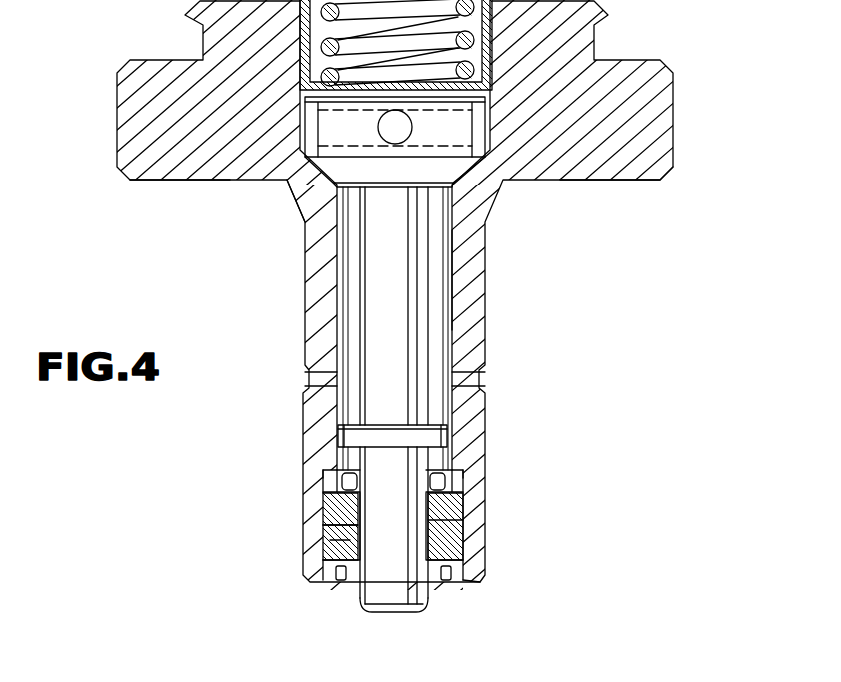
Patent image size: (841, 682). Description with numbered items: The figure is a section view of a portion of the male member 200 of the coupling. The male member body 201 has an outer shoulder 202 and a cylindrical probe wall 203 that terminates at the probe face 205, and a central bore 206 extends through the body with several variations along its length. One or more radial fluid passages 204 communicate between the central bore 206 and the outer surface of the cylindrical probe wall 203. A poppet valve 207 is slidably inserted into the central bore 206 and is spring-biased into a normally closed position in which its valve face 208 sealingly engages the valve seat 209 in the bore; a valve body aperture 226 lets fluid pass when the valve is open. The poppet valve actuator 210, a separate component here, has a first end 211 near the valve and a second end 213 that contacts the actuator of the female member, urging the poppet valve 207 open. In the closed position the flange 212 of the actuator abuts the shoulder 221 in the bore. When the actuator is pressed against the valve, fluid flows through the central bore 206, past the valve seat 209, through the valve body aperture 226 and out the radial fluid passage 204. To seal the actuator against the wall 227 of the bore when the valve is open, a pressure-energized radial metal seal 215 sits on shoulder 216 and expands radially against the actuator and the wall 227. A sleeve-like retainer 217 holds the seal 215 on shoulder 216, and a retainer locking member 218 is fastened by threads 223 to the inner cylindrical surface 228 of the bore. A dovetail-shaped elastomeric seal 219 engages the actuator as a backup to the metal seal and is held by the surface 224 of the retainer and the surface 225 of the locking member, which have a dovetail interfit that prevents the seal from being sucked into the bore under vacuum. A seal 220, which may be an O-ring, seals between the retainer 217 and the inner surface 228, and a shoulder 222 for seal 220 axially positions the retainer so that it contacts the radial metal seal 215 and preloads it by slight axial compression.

The male member 200 is at (508, 396).
The male member body 201 is at (675, 112).
The outer shoulder 202 is at (628, 185).
The cylindrical probe wall 203 is at (490, 513).
The radial fluid passage 204 is at (482, 380).
The probe face 205 is at (478, 586).
The central bore 206 is at (440, 272).
The poppet valve 207 is at (300, 113).
The valve face 208 is at (400, 187).
The valve seat 209 is at (300, 200).
The poppet valve actuator 210 is at (385, 258).
The first end 211 is at (470, 190).
The flange 212 is at (338, 432).
The second end 213 is at (395, 611).
The radial metal seal 215 is at (455, 478).
The shoulder 216 is at (355, 478).
The retainer 217 is at (445, 520).
The retainer locking member 218 is at (342, 572).
The seal 219 is at (463, 583).
The seal 220 is at (348, 515).
The shoulder 221 is at (345, 472).
The shoulder 222 is at (352, 490).
The threads 223 is at (452, 556).
The surface 224 is at (350, 540).
The surface 225 is at (350, 556).
The valve body aperture 226 is at (410, 127).
The wall 227 is at (470, 468).
The inner cylindrical surface 228 is at (450, 500).